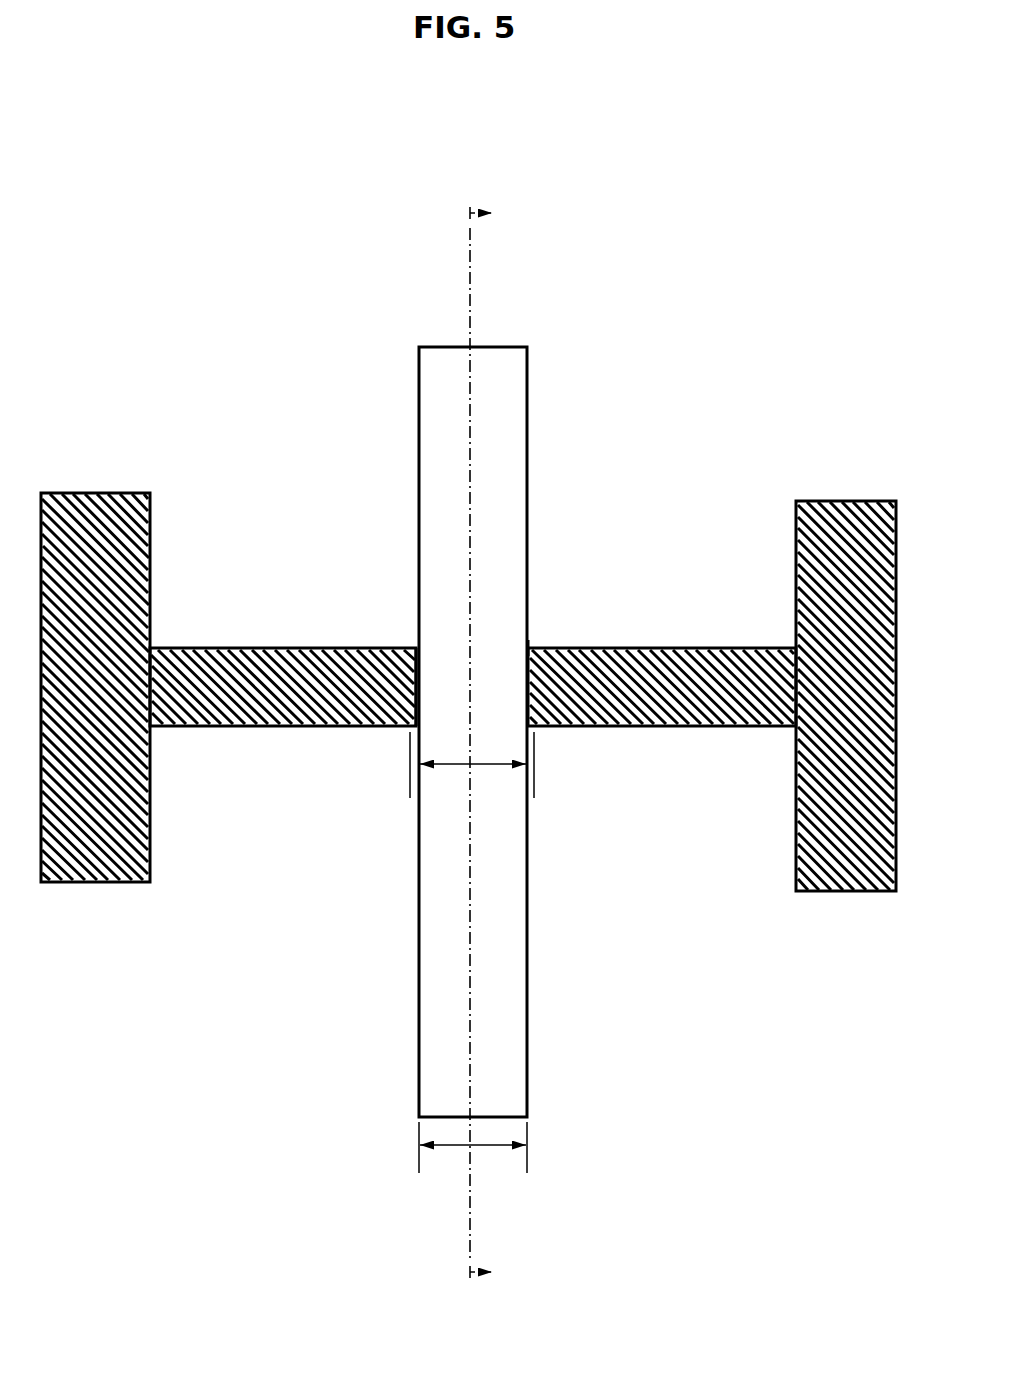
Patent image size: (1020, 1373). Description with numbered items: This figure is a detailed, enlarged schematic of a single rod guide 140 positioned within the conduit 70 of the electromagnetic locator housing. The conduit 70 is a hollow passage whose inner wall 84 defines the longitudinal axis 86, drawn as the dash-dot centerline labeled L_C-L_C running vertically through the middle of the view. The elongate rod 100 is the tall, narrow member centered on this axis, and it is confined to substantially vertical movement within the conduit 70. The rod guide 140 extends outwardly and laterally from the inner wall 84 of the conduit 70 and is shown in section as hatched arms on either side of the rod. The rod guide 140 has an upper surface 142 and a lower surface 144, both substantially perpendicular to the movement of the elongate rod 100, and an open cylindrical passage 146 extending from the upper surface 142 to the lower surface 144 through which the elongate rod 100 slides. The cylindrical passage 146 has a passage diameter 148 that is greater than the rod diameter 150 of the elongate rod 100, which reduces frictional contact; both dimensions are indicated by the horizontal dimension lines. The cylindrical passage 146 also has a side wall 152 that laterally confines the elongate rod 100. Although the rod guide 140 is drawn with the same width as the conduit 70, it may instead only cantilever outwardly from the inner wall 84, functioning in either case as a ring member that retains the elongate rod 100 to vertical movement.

The conduit 70 is at (712, 673).
The inner wall 84 is at (150, 862).
The longitudinal axis 86 is at (469, 228).
The elongate rod 100 is at (527, 370).
The rod guide 140 is at (228, 657).
The upper surface 142 is at (240, 647).
The lower surface 144 is at (738, 728).
The cylindrical passage 146 is at (533, 641).
The passage diameter 148 is at (410, 764).
The rod diameter 150 is at (527, 1145).
The side wall 152 is at (418, 673).